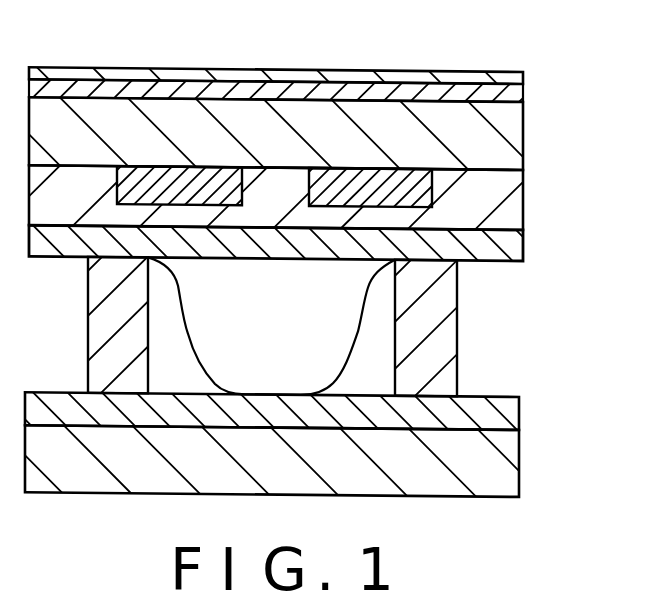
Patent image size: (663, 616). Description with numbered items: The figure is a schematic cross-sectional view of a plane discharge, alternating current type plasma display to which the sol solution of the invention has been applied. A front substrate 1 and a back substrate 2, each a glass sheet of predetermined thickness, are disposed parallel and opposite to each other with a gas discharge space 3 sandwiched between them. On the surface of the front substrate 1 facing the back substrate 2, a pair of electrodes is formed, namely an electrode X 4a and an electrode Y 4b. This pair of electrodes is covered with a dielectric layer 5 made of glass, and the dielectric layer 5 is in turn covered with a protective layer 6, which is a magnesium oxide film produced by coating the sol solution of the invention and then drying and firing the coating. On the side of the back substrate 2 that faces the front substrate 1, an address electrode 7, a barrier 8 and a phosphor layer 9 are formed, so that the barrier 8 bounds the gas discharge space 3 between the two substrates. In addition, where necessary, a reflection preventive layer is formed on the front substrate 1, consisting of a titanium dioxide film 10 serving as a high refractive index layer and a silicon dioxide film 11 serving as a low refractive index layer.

The front substrate 1 is at (512, 135).
The back substrate 2 is at (500, 477).
The gas discharge space 3 is at (257, 345).
The electrode X 4a is at (176, 173).
The electrode Y 4b is at (368, 171).
The dielectric layer 5 is at (512, 212).
The protective layer 6 is at (512, 248).
The address electrode 7 is at (508, 413).
The barrier 8 is at (442, 302).
The phosphor layer 9 is at (377, 350).
The titanium dioxide film 10 is at (513, 92).
The silicon dioxide film 11 is at (510, 73).